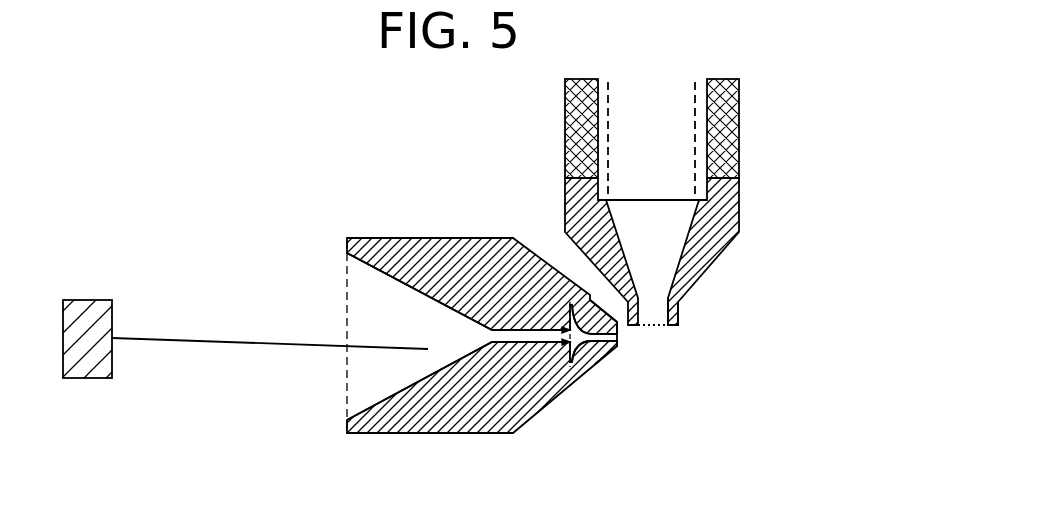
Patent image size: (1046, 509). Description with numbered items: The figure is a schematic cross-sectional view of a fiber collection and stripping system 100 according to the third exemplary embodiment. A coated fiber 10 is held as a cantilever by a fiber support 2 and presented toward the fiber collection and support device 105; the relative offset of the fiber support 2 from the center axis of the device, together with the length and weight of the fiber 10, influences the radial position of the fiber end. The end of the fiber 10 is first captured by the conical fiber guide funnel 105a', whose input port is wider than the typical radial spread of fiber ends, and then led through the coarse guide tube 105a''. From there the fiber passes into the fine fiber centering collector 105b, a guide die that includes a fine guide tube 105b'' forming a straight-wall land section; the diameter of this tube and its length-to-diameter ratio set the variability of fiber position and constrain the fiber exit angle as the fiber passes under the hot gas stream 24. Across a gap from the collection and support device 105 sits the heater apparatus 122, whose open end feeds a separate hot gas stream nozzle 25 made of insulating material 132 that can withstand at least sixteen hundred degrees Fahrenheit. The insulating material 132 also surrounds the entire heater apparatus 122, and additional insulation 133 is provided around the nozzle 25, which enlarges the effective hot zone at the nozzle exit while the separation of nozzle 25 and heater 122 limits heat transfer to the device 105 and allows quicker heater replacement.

The fiber support 2 is at (88, 300).
The fiber 10 is at (203, 338).
The fiber collection and stripping system 100 is at (402, 140).
The fiber collection and support device 105 is at (453, 238).
The conical fiber guide funnel 105a' is at (388, 334).
The coarse guide tube 105a'' is at (532, 413).
The fine fiber centering collector 105b is at (592, 378).
The fine guide tube 105b'' is at (641, 388).
The insulating material 132 is at (588, 120).
The heater apparatus 122 is at (695, 150).
The hot gas stream nozzle 25 is at (667, 296).
The insulation 133 is at (680, 300).
The hot gas stream 24 is at (652, 311).